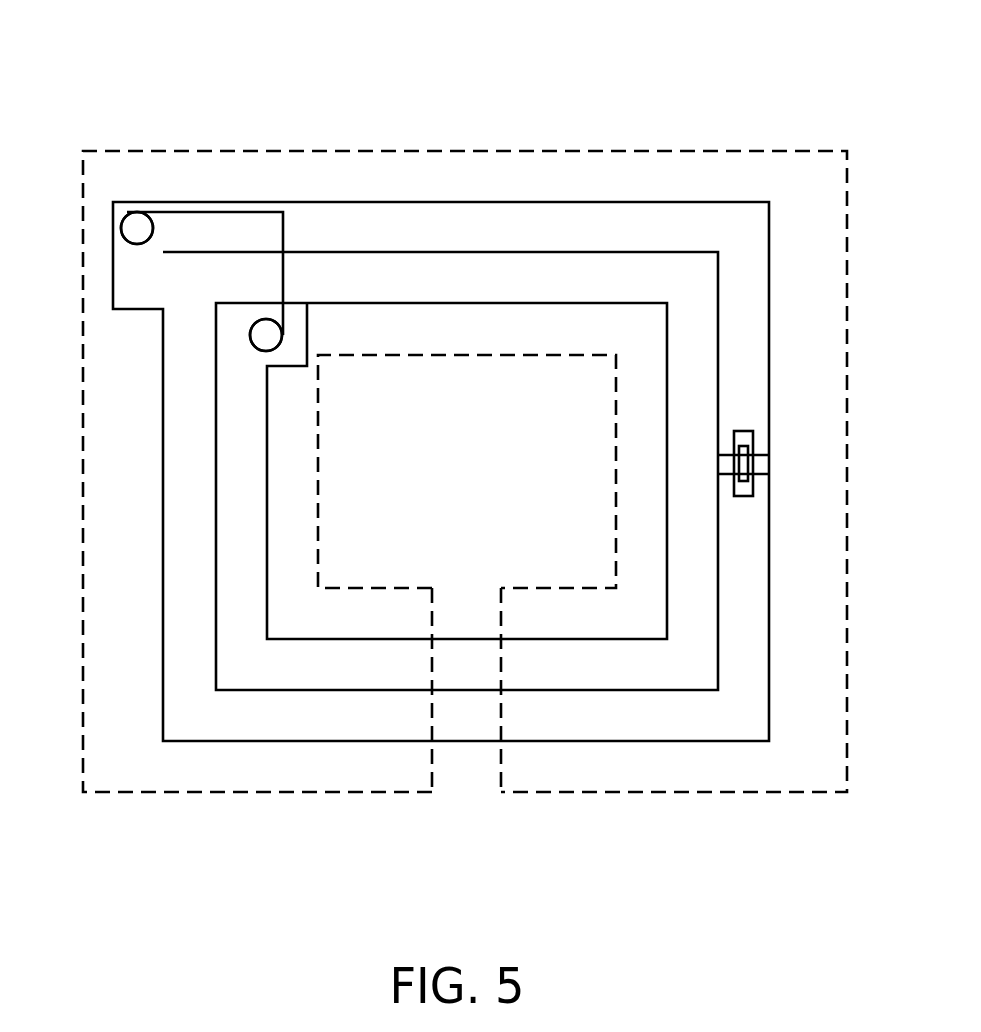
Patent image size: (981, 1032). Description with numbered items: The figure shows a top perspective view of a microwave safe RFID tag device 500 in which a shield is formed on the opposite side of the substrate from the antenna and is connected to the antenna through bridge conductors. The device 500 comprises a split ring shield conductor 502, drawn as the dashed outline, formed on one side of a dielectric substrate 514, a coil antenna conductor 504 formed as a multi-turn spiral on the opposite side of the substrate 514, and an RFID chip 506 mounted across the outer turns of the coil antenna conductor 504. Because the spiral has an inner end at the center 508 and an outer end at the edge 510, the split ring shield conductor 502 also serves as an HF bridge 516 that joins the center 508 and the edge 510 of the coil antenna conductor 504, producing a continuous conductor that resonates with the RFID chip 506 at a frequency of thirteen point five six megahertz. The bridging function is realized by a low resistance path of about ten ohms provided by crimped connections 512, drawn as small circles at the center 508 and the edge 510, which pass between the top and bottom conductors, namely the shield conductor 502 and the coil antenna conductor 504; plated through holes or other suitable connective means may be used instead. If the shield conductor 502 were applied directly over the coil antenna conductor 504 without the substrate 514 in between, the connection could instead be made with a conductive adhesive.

The microwave safe RFID tag device 500 is at (727, 93).
The split ring shield conductor 502 is at (811, 456).
The coil antenna conductor 504 is at (516, 477).
The RFID chip 506 is at (746, 483).
The center of the coil antenna conductor 508 is at (287, 328).
The edge of the coil antenna conductor 510 is at (125, 202).
The crimped connections 512 is at (137, 230).
The substrate 514 is at (775, 262).
The HF bridge 516 is at (250, 213).